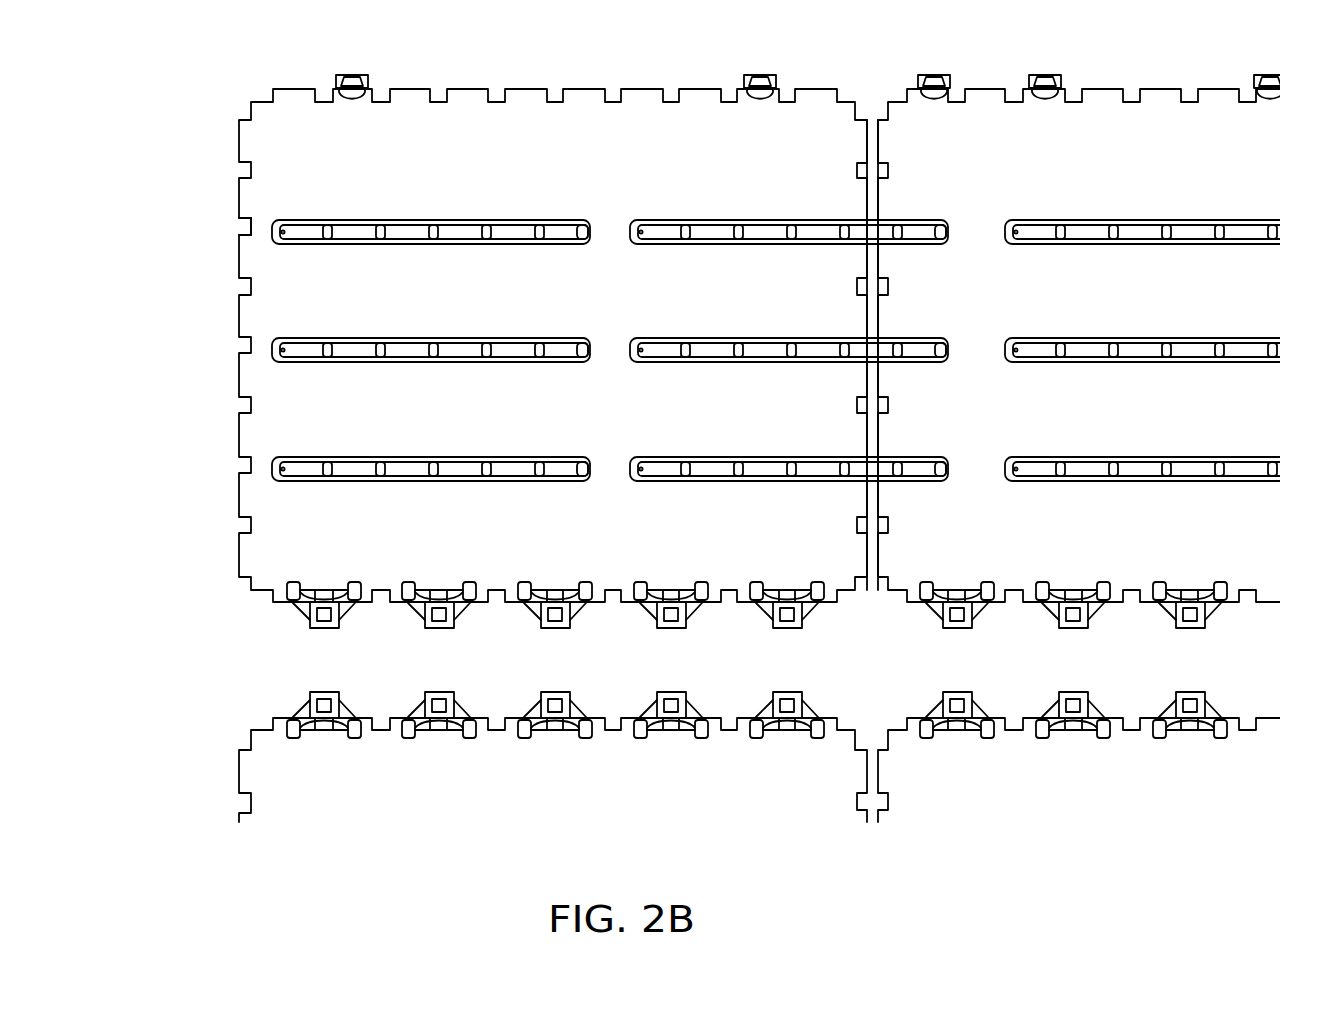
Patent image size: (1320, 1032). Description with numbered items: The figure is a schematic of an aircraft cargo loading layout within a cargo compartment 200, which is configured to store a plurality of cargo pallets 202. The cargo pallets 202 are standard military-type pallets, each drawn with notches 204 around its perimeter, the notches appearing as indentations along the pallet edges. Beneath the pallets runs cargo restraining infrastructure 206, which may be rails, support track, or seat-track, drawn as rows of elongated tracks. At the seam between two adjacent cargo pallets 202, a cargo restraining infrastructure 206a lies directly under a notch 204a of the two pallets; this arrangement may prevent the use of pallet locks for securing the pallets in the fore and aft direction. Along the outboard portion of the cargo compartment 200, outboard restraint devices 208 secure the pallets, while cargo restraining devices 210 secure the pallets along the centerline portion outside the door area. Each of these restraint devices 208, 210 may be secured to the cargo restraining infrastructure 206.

The cargo compartment 200 is at (123, 154).
The cargo pallet 202 is at (278, 268).
The notch 204 is at (249, 228).
The notch 204a is at (878, 228).
The cargo restraining infrastructure 206 is at (283, 476).
The cargo restraining infrastructure 206a is at (917, 222).
The outboard restraint device 208 is at (762, 75).
The cargo restraining device 210 is at (316, 616).